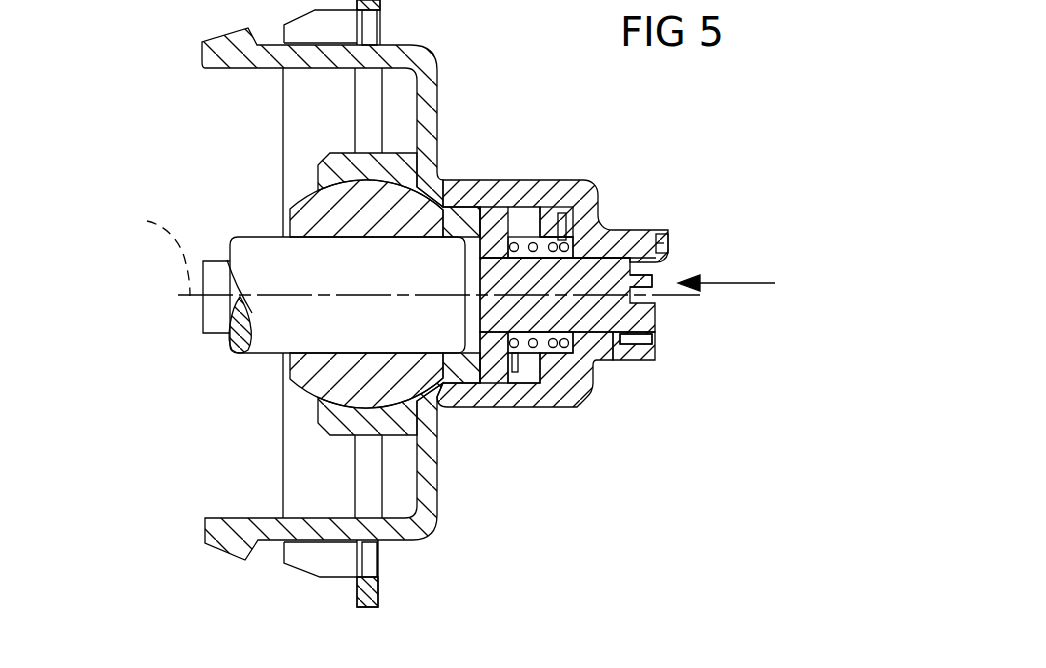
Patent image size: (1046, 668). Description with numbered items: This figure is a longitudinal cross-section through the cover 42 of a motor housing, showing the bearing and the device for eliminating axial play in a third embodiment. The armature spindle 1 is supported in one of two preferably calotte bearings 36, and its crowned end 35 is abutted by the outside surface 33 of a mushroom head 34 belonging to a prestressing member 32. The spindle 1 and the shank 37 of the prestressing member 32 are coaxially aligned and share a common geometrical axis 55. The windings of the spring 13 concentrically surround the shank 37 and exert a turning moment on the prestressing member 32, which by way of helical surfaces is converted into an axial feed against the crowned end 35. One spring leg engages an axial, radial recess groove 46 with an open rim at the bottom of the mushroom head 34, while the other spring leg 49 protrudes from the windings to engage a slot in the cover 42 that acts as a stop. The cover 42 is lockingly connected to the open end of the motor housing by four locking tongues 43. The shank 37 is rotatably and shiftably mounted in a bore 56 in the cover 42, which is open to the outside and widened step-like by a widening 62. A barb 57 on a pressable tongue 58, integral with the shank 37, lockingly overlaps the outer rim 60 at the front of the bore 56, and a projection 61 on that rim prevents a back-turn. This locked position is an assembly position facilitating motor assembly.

The armature spindle 1 is at (268, 243).
The spring 13 is at (562, 347).
The prestressing member 32 is at (746, 284).
The outside surface 33 is at (472, 248).
The mushroom head 34 is at (503, 222).
The crowned end 35 is at (472, 300).
The calotte bearing 36 is at (305, 376).
The shank 37 is at (613, 270).
The cover 42 is at (410, 533).
The locking tongues 43 is at (247, 65).
The recess groove 46 is at (513, 370).
The spring leg 49 is at (563, 217).
The geometrical axis 55 is at (151, 249).
The bore 56 is at (596, 332).
The barb 57 is at (645, 273).
The pressable tongue 58 is at (643, 255).
The outer rim 60 is at (655, 353).
The projection 61 is at (660, 241).
The widening 62 is at (642, 340).